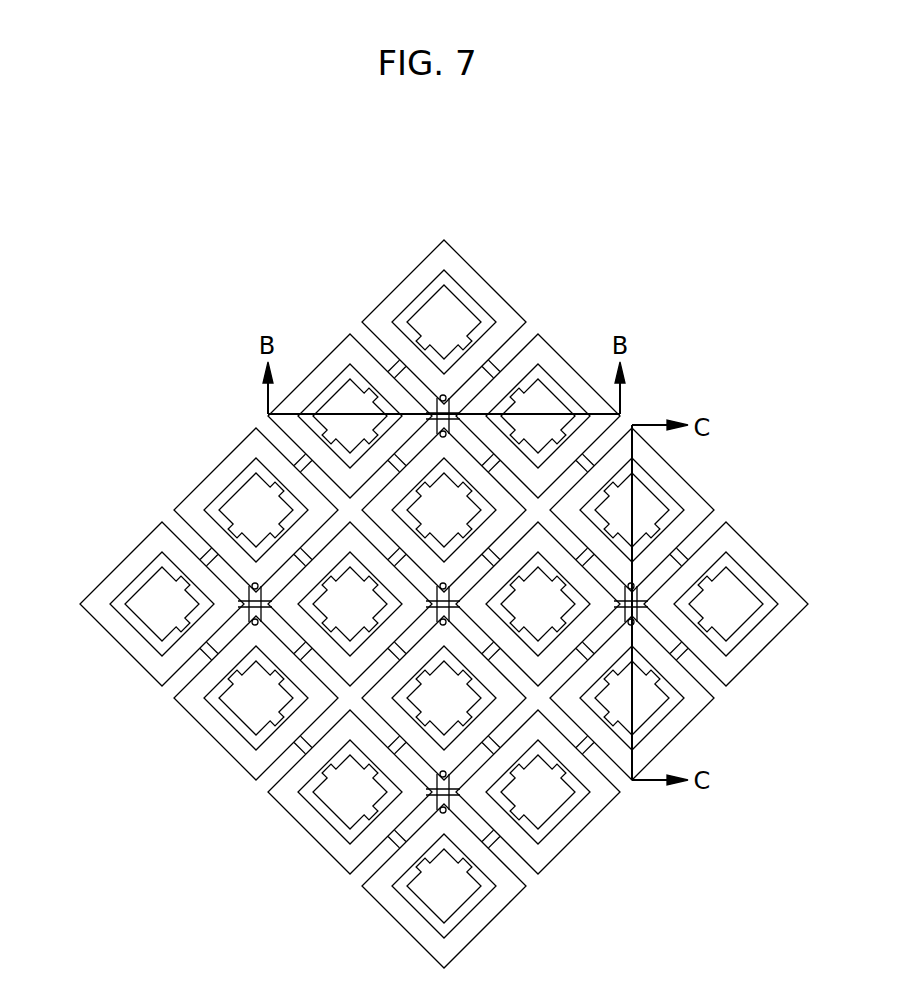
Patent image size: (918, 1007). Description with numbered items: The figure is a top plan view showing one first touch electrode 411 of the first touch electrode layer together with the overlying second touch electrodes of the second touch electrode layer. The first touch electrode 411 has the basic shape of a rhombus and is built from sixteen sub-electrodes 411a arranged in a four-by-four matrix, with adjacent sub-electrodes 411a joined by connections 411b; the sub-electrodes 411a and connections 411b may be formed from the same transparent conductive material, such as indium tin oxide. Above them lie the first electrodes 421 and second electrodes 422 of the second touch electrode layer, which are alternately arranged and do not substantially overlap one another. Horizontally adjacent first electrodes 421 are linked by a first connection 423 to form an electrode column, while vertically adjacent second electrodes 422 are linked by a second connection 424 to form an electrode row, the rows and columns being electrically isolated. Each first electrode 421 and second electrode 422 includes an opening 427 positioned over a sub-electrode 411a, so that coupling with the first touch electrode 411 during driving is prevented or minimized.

The first touch electrode 411 is at (192, 661).
The sub-electrode 411a is at (157, 623).
The connection 411b is at (222, 667).
The first electrode 421 is at (553, 357).
The second electrode 422 is at (463, 270).
The first connection 423 is at (432, 795).
The second connection 424 is at (448, 800).
The opening 427 is at (738, 572).